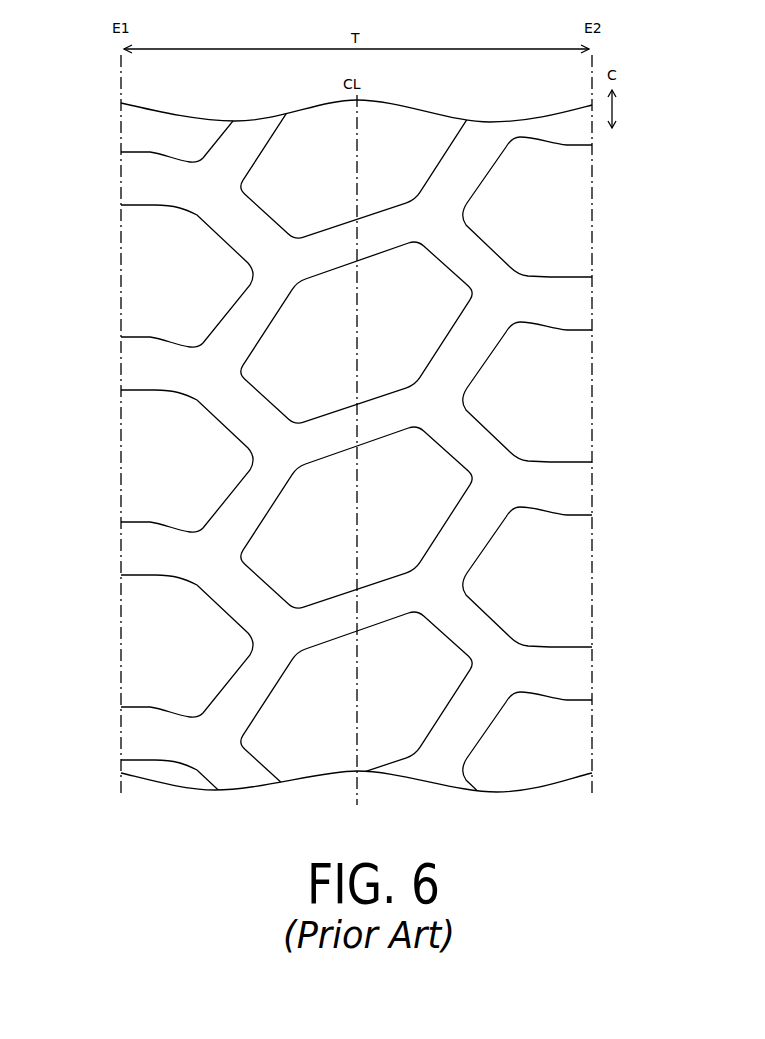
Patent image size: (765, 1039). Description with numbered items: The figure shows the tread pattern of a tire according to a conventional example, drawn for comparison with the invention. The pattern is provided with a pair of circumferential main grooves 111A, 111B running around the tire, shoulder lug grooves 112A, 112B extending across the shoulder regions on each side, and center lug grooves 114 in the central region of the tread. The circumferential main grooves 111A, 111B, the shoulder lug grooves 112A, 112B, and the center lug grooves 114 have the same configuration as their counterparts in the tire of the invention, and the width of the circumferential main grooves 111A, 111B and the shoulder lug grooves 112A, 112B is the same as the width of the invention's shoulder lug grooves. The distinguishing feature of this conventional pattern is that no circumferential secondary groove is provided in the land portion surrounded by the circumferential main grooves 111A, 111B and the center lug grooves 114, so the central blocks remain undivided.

The center lug grooves 114 is at (343, 245).
The circumferential main groove 111A is at (250, 318).
The shoulder lug groove 112A is at (150, 367).
The circumferential main groove 111B is at (467, 338).
The shoulder lug groove 112B is at (550, 491).